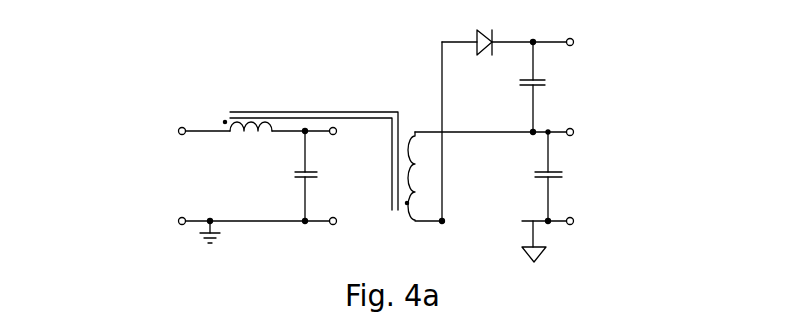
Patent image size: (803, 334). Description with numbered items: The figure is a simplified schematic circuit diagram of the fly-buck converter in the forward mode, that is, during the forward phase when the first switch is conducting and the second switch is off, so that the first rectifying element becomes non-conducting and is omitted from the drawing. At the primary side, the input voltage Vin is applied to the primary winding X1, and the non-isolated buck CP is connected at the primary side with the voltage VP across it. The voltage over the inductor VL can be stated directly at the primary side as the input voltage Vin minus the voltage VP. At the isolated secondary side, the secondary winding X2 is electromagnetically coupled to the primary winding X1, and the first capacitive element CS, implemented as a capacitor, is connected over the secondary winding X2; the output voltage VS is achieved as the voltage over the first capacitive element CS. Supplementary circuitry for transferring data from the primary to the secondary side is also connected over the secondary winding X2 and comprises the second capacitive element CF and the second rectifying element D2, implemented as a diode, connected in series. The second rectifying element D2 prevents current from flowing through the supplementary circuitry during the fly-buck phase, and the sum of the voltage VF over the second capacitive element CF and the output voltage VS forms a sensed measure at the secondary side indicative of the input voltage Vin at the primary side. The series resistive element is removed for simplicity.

The input voltage Vin is at (187, 131).
The voltage over the inductor VL is at (283, 92).
The primary winding X1 is at (310, 161).
The non-isolated buck CP is at (296, 177).
The voltage over the non-isolated buck VP is at (340, 179).
The secondary winding X2 is at (489, 133).
The second rectifying element D2 is at (508, 27).
The second capacitive element CF is at (519, 88).
The voltage over the second capacitive element VF is at (564, 79).
The first capacitive element CS is at (543, 196).
The output voltage VS is at (580, 179).